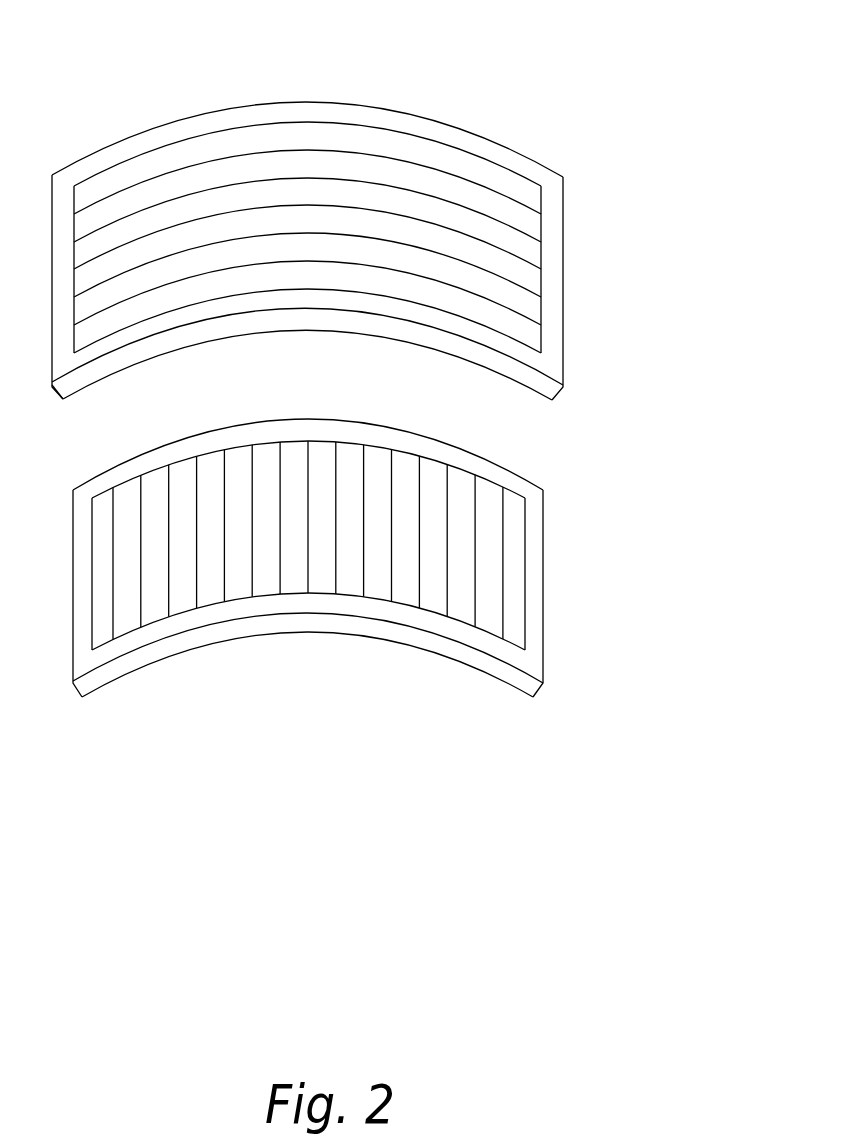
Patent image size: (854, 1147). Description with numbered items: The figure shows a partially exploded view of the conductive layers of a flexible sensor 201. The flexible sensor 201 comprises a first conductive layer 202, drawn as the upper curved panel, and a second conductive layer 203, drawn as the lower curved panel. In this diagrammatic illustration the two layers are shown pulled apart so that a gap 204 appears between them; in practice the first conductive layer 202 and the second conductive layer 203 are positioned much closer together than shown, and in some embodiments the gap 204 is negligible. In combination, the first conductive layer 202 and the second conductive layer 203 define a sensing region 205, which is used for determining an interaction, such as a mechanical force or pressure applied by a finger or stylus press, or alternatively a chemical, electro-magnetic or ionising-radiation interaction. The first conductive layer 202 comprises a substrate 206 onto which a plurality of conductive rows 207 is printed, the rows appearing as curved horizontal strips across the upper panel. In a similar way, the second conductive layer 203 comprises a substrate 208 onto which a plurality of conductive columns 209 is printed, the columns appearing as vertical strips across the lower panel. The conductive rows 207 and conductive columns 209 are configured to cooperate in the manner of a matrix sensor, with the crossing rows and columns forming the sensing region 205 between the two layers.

The flexible sensor 201 is at (540, 126).
The first conductive layer 202 is at (558, 232).
The second conductive layer 203 is at (537, 492).
The gap 204 is at (195, 410).
The sensing region 205 is at (355, 293).
The substrate 206 is at (66, 392).
The conductive rows 207 is at (537, 305).
The substrate 208 is at (513, 677).
The conductive columns 209 is at (128, 628).